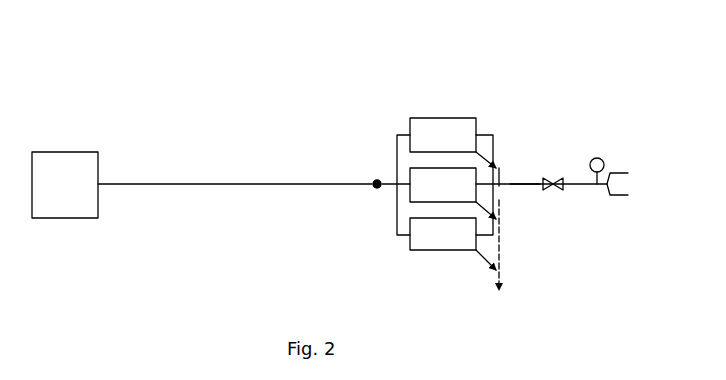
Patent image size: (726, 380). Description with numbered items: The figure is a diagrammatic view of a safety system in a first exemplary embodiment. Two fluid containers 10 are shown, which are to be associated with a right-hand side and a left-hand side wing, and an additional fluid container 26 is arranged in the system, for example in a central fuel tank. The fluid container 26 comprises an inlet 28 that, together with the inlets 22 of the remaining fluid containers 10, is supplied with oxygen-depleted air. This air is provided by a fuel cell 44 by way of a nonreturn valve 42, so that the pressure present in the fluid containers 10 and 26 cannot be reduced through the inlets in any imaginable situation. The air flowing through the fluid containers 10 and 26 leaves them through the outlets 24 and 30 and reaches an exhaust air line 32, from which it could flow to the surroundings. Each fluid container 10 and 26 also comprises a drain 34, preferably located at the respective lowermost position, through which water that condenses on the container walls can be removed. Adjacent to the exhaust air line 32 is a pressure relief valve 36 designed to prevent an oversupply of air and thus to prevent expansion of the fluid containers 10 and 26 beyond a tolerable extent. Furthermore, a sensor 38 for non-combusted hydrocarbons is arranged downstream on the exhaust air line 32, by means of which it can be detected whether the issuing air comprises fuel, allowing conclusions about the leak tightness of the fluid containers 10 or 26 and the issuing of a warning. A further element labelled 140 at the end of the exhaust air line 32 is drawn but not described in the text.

The fluid container 10 is at (477, 120).
The inlet 22 is at (409, 130).
The outlet 24 is at (480, 129).
The additional fluid container 26 is at (478, 183).
The inlet 28 is at (410, 187).
The outlet 30 is at (480, 181).
The exhaust air line 32 is at (523, 185).
The drain 34 is at (482, 150).
The pressure relief valve 36 is at (557, 177).
The sensor 38 is at (613, 156).
The nonreturn valve 42 is at (372, 182).
The fuel cell 44 is at (82, 207).
The branch connector 140 is at (642, 200).